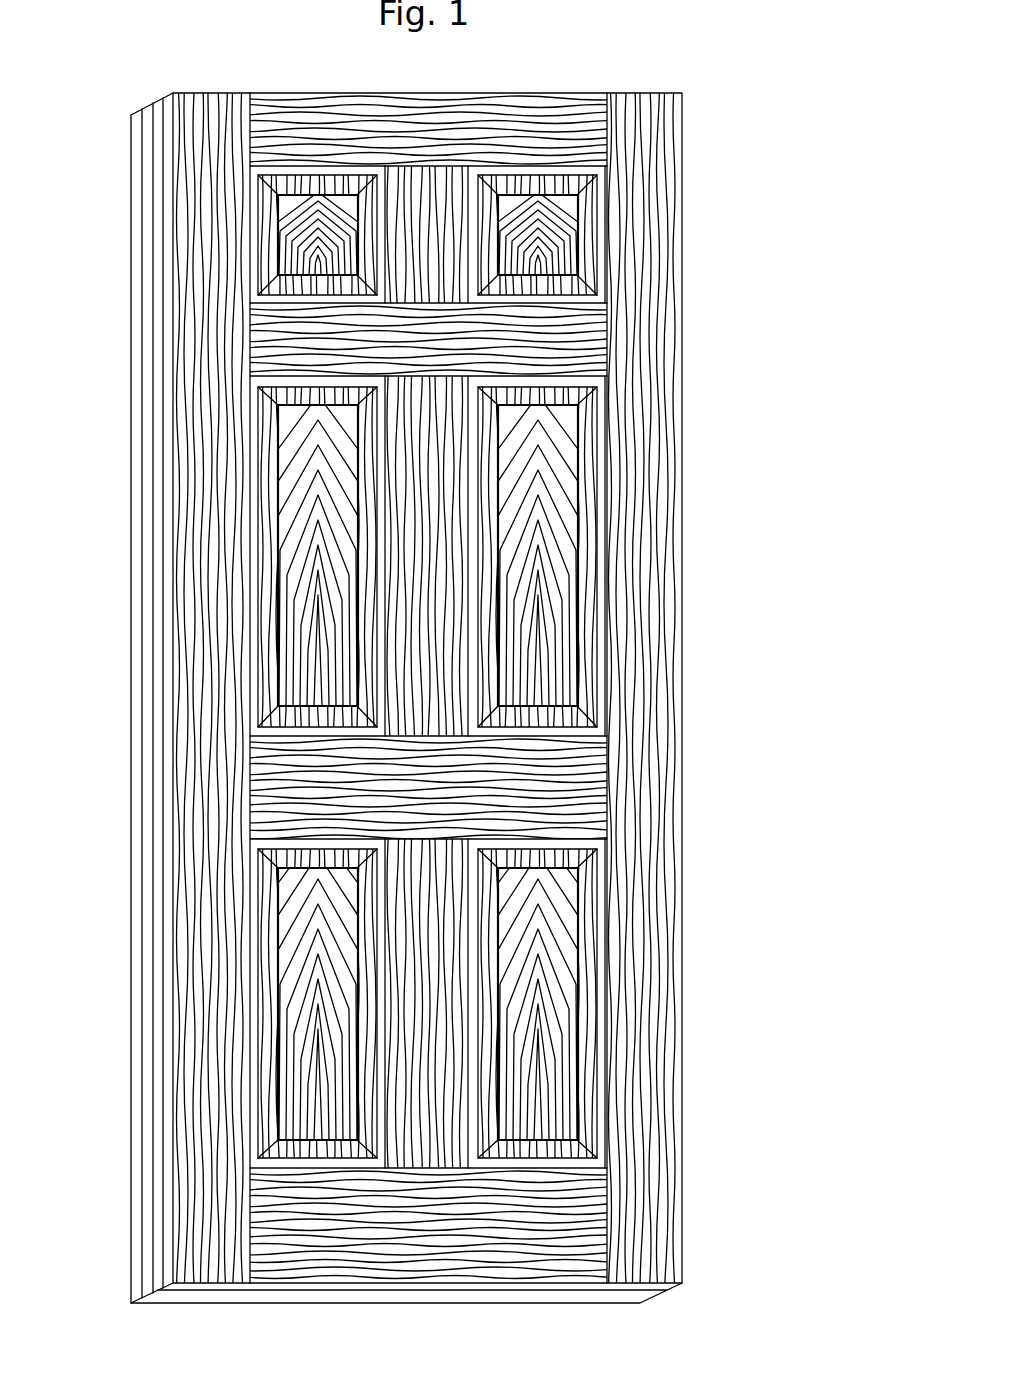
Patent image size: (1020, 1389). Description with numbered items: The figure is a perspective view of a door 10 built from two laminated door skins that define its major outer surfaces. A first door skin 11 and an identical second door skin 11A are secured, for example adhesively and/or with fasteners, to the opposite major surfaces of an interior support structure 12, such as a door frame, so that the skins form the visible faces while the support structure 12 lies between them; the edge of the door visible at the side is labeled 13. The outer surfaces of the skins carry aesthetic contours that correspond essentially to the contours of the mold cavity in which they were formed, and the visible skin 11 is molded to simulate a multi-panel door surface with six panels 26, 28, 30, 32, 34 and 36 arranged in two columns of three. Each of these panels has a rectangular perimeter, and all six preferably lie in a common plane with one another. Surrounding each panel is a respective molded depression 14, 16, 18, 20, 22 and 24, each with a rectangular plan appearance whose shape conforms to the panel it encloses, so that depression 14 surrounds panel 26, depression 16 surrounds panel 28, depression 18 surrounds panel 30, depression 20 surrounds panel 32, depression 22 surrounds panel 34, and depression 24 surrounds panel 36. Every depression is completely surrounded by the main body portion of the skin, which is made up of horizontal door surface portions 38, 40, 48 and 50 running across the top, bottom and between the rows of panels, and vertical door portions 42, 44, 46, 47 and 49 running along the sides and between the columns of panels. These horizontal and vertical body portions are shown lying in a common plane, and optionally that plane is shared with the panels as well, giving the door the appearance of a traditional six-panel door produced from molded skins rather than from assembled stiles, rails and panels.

The door 10 is at (125, 90).
The first door skin 11 is at (168, 425).
The second door skin 11A is at (133, 332).
The interior support structure 12 is at (153, 747).
The stile 13 is at (653, 287).
The molded depression 14 is at (263, 212).
The molded depression 16 is at (590, 210).
The molded depression 18 is at (273, 533).
The molded depression 20 is at (553, 398).
The molded depression 22 is at (277, 938).
The molded depression 24 is at (585, 933).
The panel 26 is at (300, 240).
The panel 28 is at (553, 237).
The panel 30 is at (297, 606).
The panel 32 is at (537, 607).
The panel 34 is at (293, 1012).
The panel 36 is at (540, 1013).
The horizontal door surface portion 38 is at (583, 132).
The horizontal door surface portion 40 is at (592, 1250).
The vertical door portion 42 is at (195, 672).
The vertical door portion 44 is at (640, 672).
The vertical door portion 46 is at (450, 528).
The vertical door portion 47 is at (422, 258).
The horizontal door surface portion 48 is at (573, 342).
The vertical door portion 49 is at (450, 1082).
The horizontal door surface portion 50 is at (592, 797).